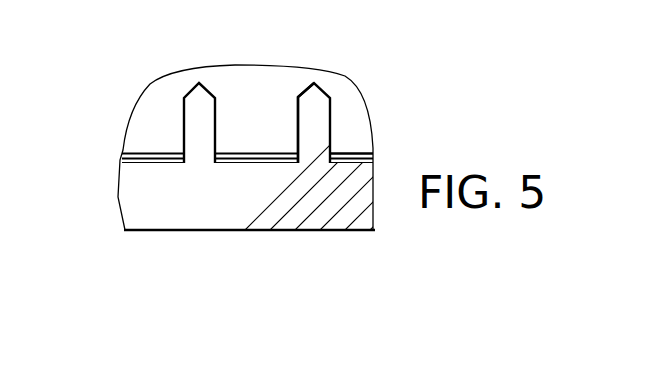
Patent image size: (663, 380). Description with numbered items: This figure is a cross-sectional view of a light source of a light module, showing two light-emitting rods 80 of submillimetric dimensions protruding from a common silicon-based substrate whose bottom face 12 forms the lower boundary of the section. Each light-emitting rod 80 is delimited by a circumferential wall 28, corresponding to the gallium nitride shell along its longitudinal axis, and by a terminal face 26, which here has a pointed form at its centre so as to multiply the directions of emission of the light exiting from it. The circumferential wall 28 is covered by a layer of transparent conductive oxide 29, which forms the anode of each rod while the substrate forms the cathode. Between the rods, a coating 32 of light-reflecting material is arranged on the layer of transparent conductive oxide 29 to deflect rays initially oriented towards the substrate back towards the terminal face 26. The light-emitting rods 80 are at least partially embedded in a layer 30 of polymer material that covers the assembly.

The bottom face 12 is at (345, 232).
The terminal face 26 is at (320, 90).
The circumferential wall 28 is at (300, 137).
The layer of transparent conductive oxide 29 is at (163, 162).
The layer of polymer material 30 is at (247, 88).
The coating of light-reflecting material 32 is at (357, 152).
The light-emitting rod 80 is at (185, 120).